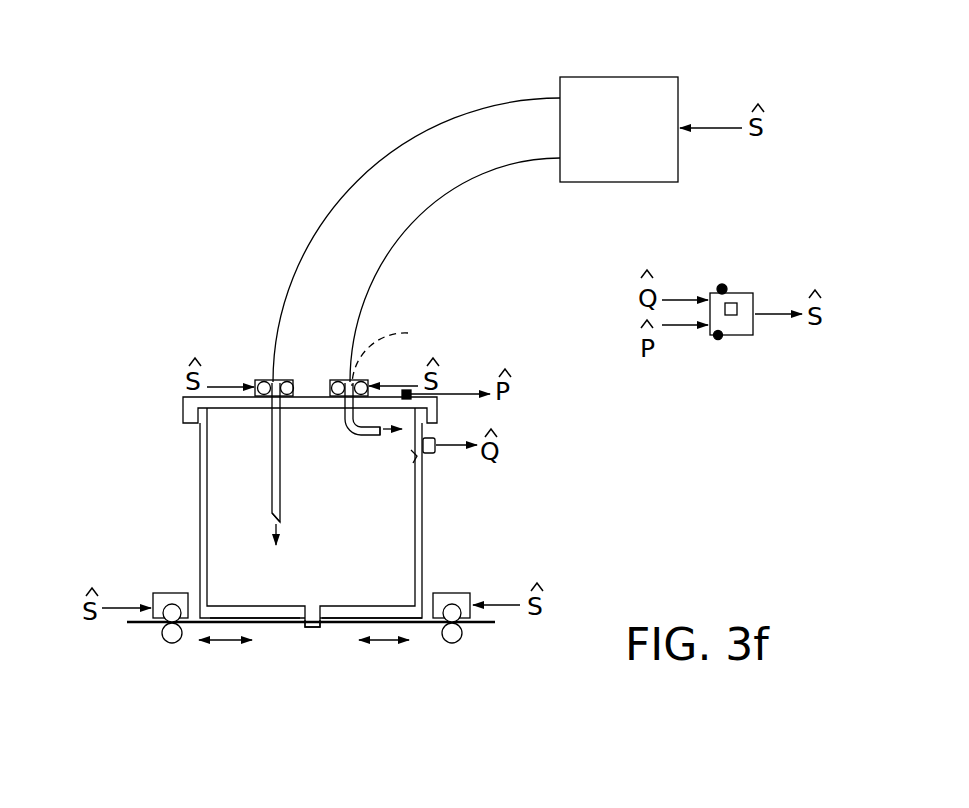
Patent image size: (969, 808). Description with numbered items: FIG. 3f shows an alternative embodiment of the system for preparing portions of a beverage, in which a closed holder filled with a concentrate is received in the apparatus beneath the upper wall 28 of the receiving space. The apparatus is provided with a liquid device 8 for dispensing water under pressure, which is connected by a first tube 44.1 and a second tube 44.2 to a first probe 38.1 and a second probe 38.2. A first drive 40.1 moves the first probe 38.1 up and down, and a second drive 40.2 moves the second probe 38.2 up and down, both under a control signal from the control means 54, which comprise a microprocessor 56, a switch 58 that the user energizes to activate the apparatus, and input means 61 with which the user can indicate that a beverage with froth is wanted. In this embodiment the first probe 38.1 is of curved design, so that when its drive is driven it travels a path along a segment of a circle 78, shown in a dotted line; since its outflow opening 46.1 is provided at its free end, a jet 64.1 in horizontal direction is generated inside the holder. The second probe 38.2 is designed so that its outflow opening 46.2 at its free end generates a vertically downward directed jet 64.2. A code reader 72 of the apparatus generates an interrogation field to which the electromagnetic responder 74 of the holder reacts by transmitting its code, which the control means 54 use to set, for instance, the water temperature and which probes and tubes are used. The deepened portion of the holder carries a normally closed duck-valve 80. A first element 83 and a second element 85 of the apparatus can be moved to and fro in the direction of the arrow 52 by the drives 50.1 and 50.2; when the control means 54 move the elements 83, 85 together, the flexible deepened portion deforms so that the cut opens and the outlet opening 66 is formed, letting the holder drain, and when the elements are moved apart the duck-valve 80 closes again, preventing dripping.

The liquid device 8 is at (598, 167).
The upper wall 28 is at (313, 395).
The first probe 38.1 is at (355, 430).
The second probe 38.2 is at (270, 457).
The first drive 40.1 is at (335, 380).
The second drive 40.2 is at (262, 379).
The first tube 44.1 is at (440, 207).
The second tube 44.2 is at (362, 185).
The outflow opening 46.1 is at (383, 434).
The outflow opening 46.2 is at (272, 513).
The drive 50.1 is at (165, 593).
The drive 50.2 is at (463, 593).
The arrow 52 is at (227, 642).
The control means 54 is at (737, 325).
The microprocessor 56 is at (737, 307).
The switch 58 is at (725, 284).
The input means 61 is at (718, 338).
The jet 64.1 is at (386, 434).
The jet 64.2 is at (275, 526).
The outlet opening 66 is at (315, 628).
The code reader 72 is at (436, 452).
The electromagnetic responder 74 is at (416, 457).
The segment of a circle 78 is at (398, 333).
The duck-valve 80 is at (325, 619).
The first element 83 is at (278, 620).
The second element 85 is at (422, 620).